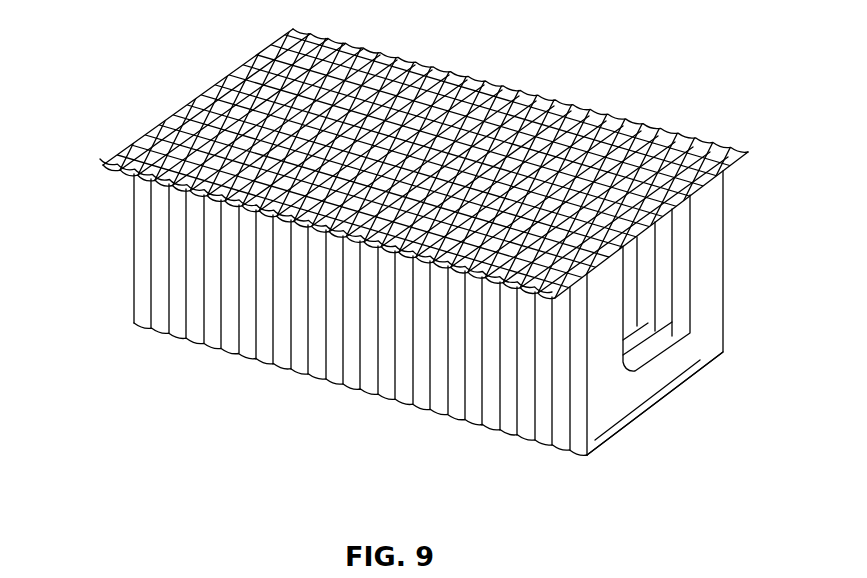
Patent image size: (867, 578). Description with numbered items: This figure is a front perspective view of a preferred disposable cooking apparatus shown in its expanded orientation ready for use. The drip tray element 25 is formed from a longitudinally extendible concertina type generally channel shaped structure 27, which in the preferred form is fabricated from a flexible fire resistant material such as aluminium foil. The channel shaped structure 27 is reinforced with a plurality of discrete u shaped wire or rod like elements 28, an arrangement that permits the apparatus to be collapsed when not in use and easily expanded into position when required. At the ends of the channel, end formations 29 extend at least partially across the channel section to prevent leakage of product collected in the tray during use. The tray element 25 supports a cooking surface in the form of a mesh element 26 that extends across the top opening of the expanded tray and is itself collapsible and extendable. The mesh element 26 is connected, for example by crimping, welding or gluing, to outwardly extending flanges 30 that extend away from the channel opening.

The tray element 25 is at (742, 260).
The mesh element 26 is at (237, 120).
The concertina type channel shaped structure 27 is at (266, 358).
The u shaped wire or rod like elements 28 is at (645, 342).
The end formations 29 is at (612, 417).
The outwardly extending flanges 30 is at (515, 88).